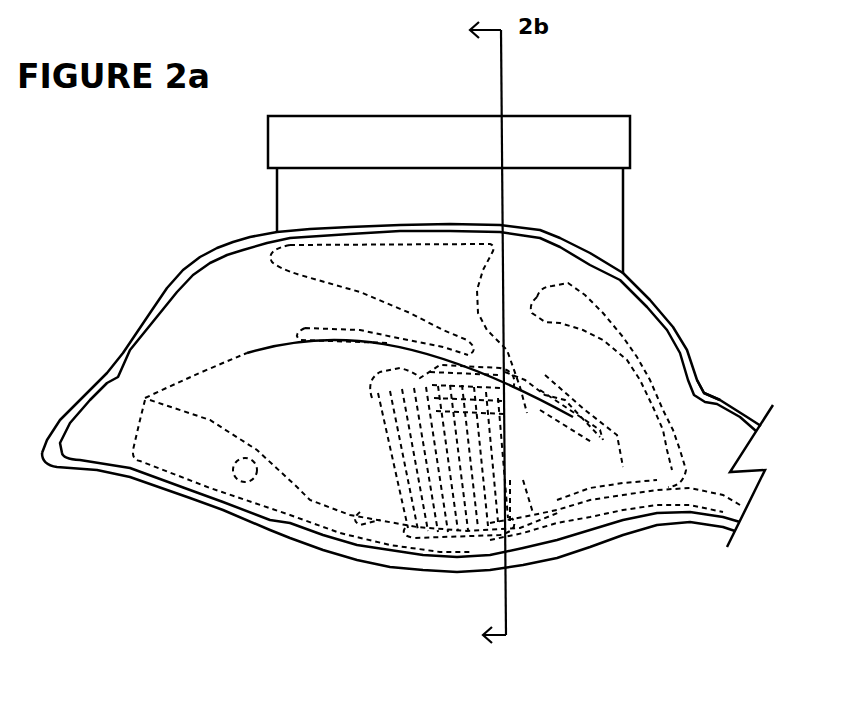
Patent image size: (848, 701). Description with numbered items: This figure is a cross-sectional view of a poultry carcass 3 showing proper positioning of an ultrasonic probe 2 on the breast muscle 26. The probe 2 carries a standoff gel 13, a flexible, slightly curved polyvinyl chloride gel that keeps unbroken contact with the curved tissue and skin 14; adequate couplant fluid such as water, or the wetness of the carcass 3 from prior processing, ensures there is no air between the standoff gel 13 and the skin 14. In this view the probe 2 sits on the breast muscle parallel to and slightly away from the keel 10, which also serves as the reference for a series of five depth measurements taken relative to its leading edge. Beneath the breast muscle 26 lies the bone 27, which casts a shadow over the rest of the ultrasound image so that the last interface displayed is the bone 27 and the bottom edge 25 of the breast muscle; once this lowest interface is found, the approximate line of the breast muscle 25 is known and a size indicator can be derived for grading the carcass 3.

The ultrasonic probe 2 is at (631, 140).
The standoff gel 13 is at (612, 212).
The skin 14 is at (673, 327).
The breast muscle 26 is at (713, 397).
The carcass 3 is at (107, 453).
The keel 10 is at (305, 265).
The bone 27 is at (327, 330).
The bottom edge of the breast muscle 25 is at (322, 350).